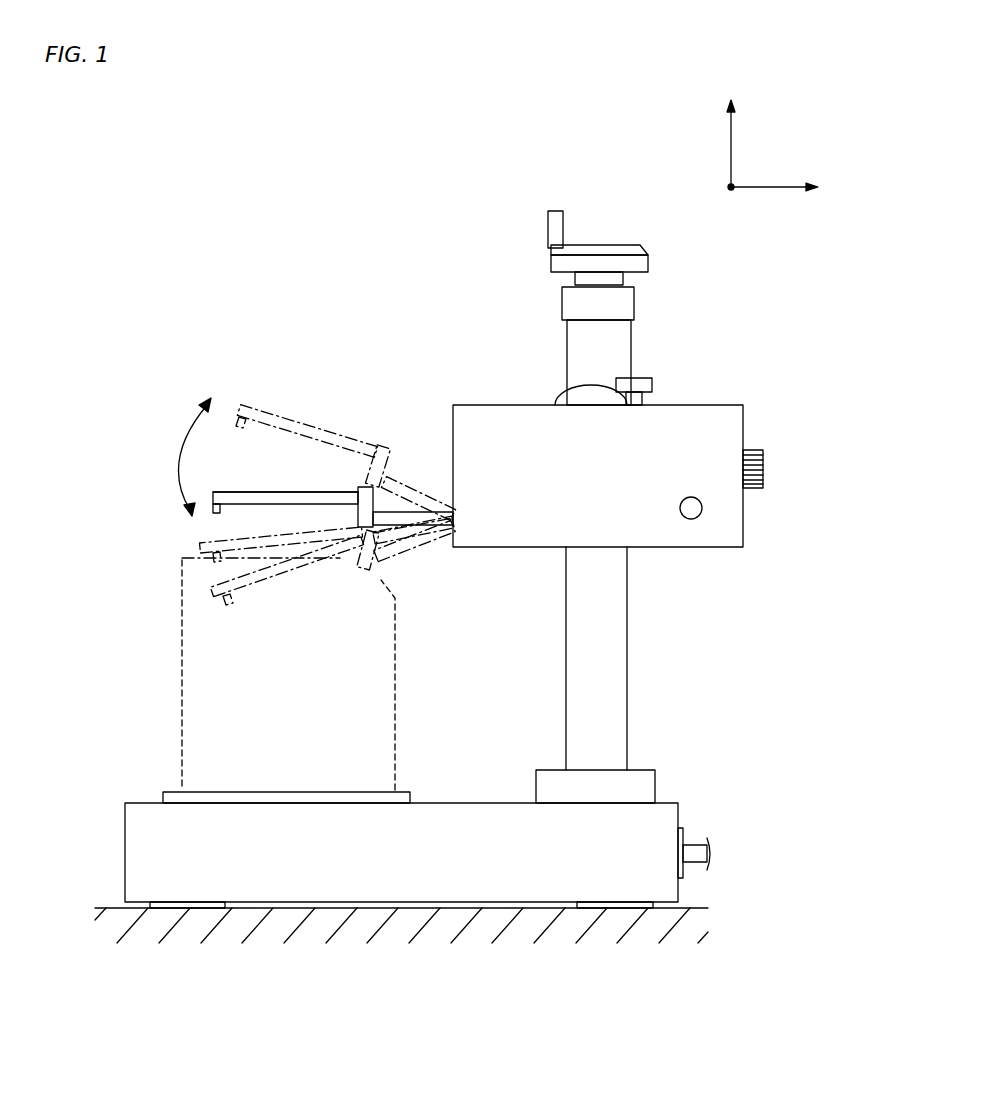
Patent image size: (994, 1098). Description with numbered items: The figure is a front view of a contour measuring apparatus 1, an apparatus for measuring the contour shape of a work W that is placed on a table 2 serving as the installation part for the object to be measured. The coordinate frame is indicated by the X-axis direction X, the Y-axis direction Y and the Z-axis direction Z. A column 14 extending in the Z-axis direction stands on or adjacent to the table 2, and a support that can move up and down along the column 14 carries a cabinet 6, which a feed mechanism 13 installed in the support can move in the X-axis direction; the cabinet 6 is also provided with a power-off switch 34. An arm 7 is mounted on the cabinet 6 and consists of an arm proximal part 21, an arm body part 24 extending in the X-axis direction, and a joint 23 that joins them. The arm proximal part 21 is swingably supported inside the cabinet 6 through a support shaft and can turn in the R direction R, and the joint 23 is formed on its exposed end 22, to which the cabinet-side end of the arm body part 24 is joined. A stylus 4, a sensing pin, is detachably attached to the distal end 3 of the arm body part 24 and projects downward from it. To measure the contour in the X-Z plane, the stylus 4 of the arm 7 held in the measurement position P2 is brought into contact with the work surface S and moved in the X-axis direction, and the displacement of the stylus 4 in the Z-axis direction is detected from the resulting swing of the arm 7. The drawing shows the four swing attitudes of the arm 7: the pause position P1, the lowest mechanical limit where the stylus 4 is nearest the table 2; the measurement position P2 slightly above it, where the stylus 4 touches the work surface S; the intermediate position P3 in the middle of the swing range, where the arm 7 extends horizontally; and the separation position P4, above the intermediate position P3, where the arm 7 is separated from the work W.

The contour measuring apparatus 1 is at (448, 555).
The table 2 is at (143, 862).
The distal end 3 is at (285, 466).
The stylus 4 is at (215, 400).
The cabinet 6 is at (497, 417).
The arm 7 is at (268, 492).
The feed mechanism 13 is at (770, 442).
The column 14 is at (613, 665).
The arm proximal part 21 is at (435, 545).
The exposed end 22 is at (378, 563).
The joint 23 is at (357, 505).
The arm body part 24 is at (302, 492).
The power-off switch 34 is at (690, 497).
The work W is at (200, 748).
The work surface S is at (182, 552).
The R direction R is at (184, 462).
The pause position P1 is at (181, 640).
The measurement position P2 is at (186, 562).
The intermediate position P3 is at (205, 492).
The separation position P4 is at (237, 400).
The X-axis direction X is at (783, 188).
The Y-axis direction Y is at (719, 188).
The Z-axis direction Z is at (730, 131).